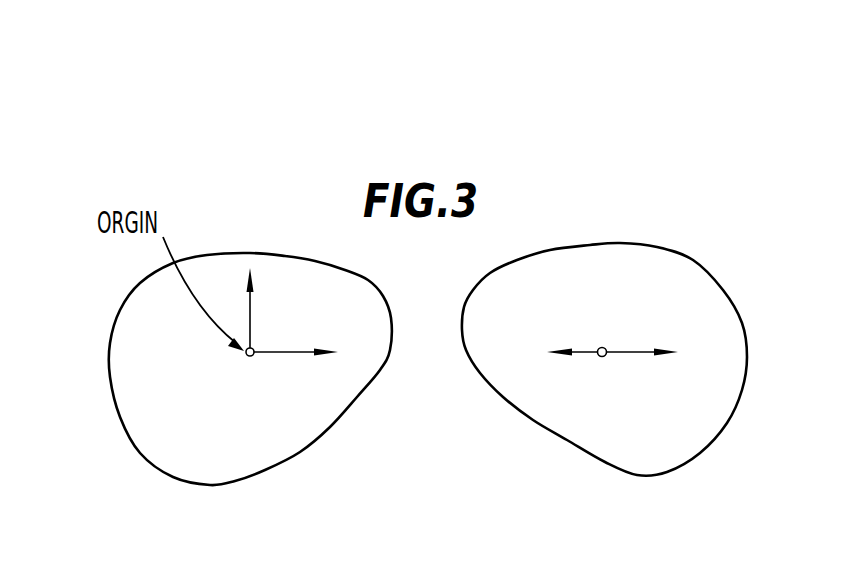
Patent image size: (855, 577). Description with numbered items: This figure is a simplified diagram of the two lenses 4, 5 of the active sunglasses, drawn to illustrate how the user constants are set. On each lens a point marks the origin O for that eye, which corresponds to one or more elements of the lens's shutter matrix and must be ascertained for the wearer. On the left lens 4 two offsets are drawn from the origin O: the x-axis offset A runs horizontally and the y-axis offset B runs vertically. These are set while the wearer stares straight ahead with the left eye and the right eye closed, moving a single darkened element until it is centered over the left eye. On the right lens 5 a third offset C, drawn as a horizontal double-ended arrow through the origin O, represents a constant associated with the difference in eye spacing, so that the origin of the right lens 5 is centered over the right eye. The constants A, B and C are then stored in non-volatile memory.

The left lens 4 is at (265, 253).
The right lens 5 is at (678, 250).
The origin O is at (426, 372).
The x-axis offset A is at (296, 372).
The y-axis offset B is at (258, 307).
The third offset C is at (612, 372).